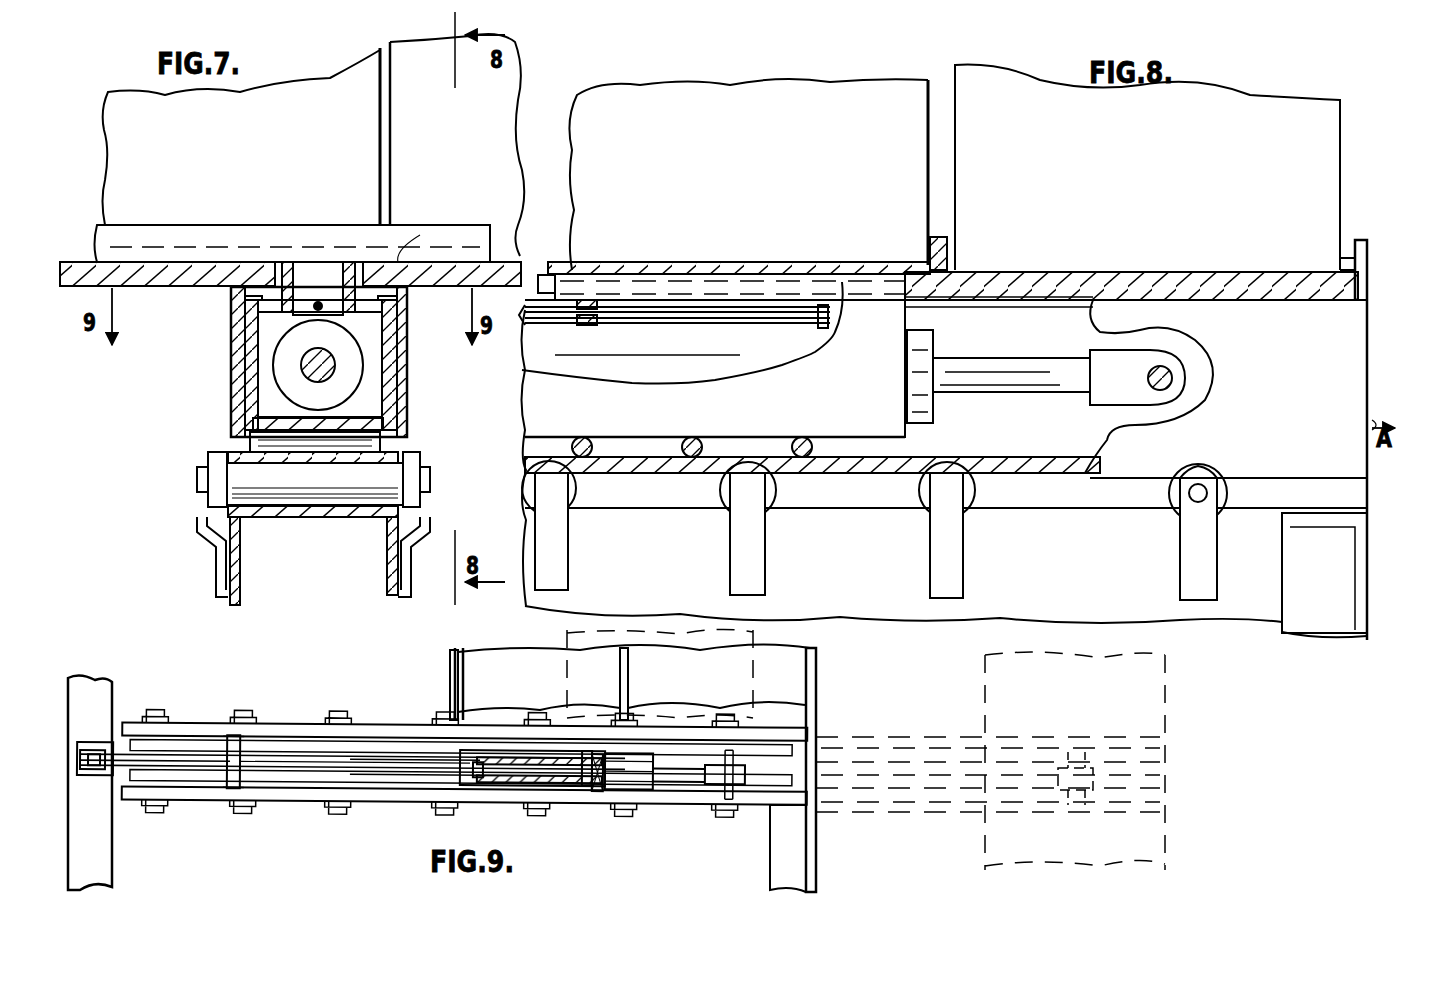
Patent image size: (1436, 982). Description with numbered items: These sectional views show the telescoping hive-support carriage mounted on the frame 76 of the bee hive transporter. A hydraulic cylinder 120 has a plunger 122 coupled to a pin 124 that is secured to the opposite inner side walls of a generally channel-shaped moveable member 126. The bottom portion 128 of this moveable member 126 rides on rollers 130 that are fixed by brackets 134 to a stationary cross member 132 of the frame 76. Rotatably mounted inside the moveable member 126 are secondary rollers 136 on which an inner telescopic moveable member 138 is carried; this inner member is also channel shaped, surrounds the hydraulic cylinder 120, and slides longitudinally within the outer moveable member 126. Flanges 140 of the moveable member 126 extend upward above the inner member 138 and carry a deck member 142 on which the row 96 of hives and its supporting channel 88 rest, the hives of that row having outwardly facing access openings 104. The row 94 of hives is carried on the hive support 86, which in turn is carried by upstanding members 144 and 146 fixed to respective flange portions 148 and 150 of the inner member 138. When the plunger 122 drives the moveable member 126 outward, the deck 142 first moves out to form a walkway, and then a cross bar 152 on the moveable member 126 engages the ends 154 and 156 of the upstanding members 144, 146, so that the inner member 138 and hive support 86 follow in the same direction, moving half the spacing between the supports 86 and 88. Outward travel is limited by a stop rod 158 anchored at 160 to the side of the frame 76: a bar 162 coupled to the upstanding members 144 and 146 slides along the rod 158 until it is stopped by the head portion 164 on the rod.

In FIG. 9, the frame 76 is at (98, 850).
In FIG. 7, the hive support 86 is at (322, 253).
In FIG. 8, the hive support 86 is at (810, 268).
In FIG. 8, the hive support 88 is at (1286, 280).
In FIG. 8, the row of hives 94 is at (805, 78).
In FIG. 8, the row of hives 96 is at (1346, 102).
In FIG. 8, the access opening 104 is at (1345, 240).
In FIG. 7, the hydraulic cylinder 120 is at (252, 325).
In FIG. 8, the hydraulic cylinder 120 is at (935, 337).
In FIG. 9, the hydraulic cylinder 120 is at (640, 760).
In FIG. 8, the plunger 122 is at (1045, 375).
In FIG. 9, the plunger 122 is at (690, 768).
In FIG. 8, the pin 124 is at (1163, 365).
In FIG. 9, the pin 124 is at (735, 797).
In FIG. 7, the moveable member 126 is at (231, 378).
In FIG. 8, the moveable member 126 is at (1342, 380).
In FIG. 9, the moveable member 126 is at (685, 808).
In FIG. 8, the bottom portion 128 is at (868, 473).
In FIG. 7, the rollers 130 is at (345, 480).
In FIG. 8, the rollers 130 is at (725, 495).
In FIG. 9, the rollers 130 is at (262, 720).
In FIG. 7, the cross member 132 is at (240, 548).
In FIG. 7, the brackets 134 is at (200, 518).
In FIG. 8, the brackets 134 is at (925, 560).
In FIG. 7, the secondary rollers 136 is at (231, 412).
In FIG. 8, the secondary rollers 136 is at (732, 437).
In FIG. 7, the inner telescopic moveable member 138 is at (388, 400).
In FIG. 8, the inner telescopic moveable member 138 is at (710, 420).
In FIG. 7, the flanges 140 is at (250, 275).
In FIG. 7, the deck member 142 is at (192, 275).
In FIG. 7, the upstanding member 144 is at (287, 265).
In FIG. 8, the upstanding member 144 is at (712, 288).
In FIG. 9, the upstanding member 144 is at (540, 750).
In FIG. 7, the upstanding member 146 is at (350, 265).
In FIG. 8, the upstanding member 146 is at (878, 290).
In FIG. 9, the upstanding member 146 is at (540, 790).
In FIG. 7, the flange portion 148 is at (232, 310).
In FIG. 7, the flange portion 150 is at (380, 300).
In FIG. 8, the flange portion 150 is at (548, 265).
In FIG. 9, the cross bar 152 is at (240, 770).
In FIG. 9, the end 154 is at (470, 770).
In FIG. 9, the end 156 is at (485, 775).
In FIG. 8, the stop rod 158 is at (652, 325).
In FIG. 9, the stop rod 158 is at (205, 757).
In FIG. 9, the anchor 160 is at (98, 740).
In FIG. 7, the bar 162 is at (412, 231).
In FIG. 8, the bar 162 is at (590, 300).
In FIG. 9, the bar 162 is at (485, 755).
In FIG. 8, the head portion 164 is at (818, 328).
In FIG. 9, the head portion 164 is at (603, 790).